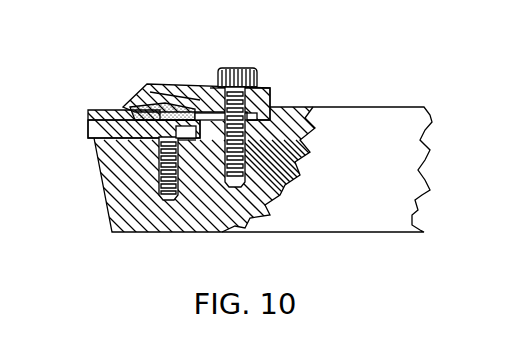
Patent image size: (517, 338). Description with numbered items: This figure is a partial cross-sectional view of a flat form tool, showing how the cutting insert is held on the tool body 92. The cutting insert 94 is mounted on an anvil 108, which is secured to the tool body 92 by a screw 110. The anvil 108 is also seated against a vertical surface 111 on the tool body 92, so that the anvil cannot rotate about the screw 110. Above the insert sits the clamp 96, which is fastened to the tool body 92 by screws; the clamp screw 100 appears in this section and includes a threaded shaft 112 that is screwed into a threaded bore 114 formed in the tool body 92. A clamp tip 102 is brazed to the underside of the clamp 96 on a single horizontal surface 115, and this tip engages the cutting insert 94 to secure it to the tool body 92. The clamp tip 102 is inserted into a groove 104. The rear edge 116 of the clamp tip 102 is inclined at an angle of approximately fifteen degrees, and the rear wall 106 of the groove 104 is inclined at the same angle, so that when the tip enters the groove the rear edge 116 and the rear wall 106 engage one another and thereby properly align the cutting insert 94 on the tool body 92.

The tool body 92 is at (400, 118).
The cutting insert 94 is at (88, 115).
The clamp 96 is at (164, 107).
The clamp screw 100 is at (256, 80).
The clamp tip 102 is at (135, 112).
The groove 104 is at (124, 100).
The rear wall 106 is at (200, 113).
The anvil 108 is at (88, 130).
The screw 110 is at (160, 165).
The vertical surface 111 is at (195, 140).
The threaded shaft 112 is at (246, 106).
The threaded bore 114 is at (240, 160).
The horizontal surface 115 is at (165, 100).
The rear edge 116 is at (214, 86).